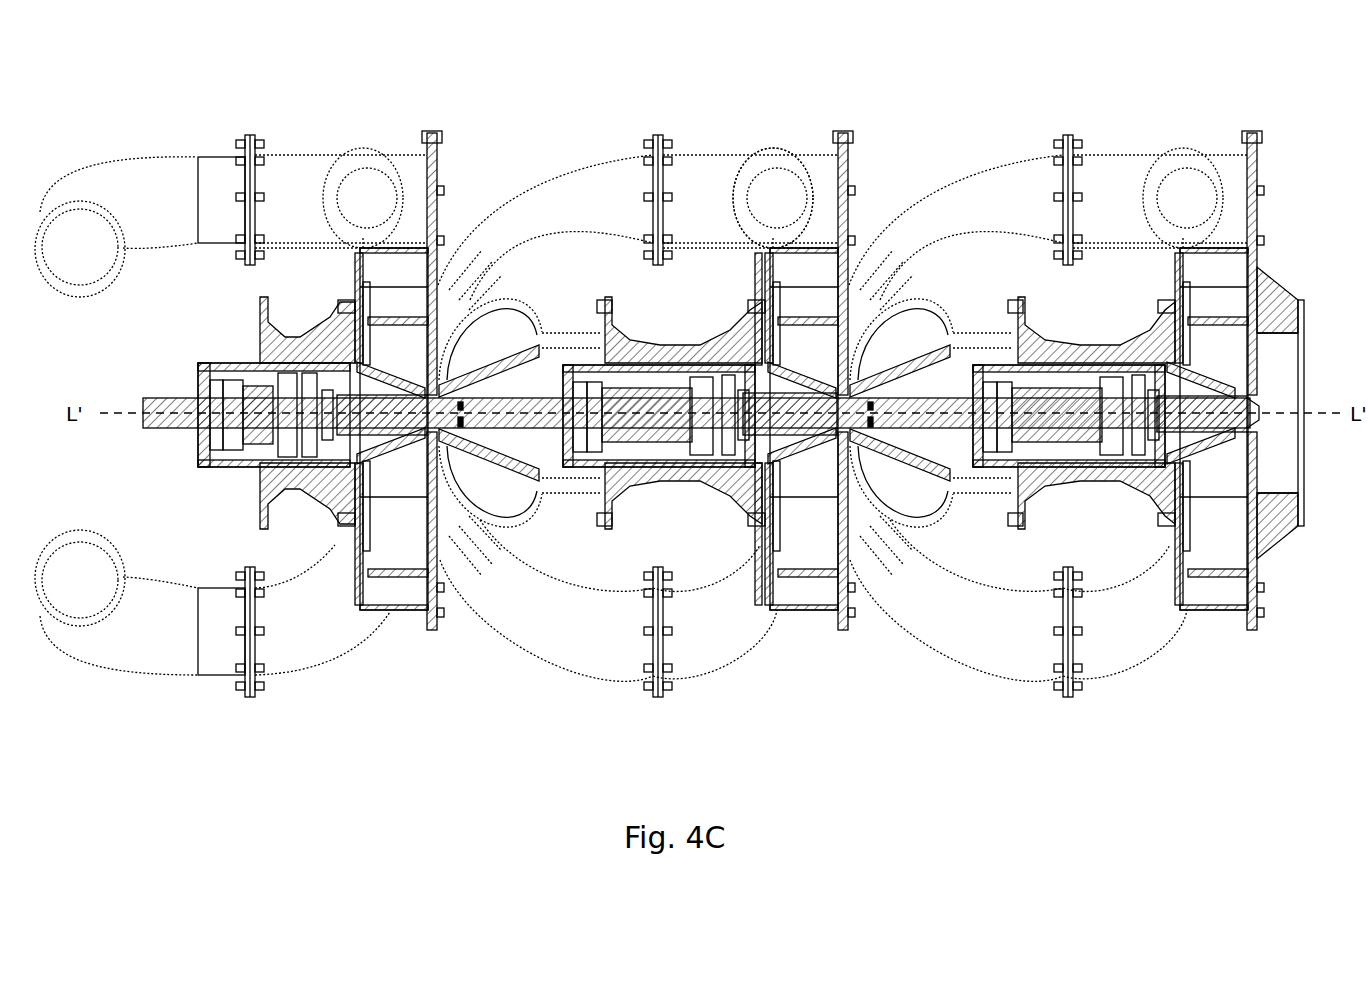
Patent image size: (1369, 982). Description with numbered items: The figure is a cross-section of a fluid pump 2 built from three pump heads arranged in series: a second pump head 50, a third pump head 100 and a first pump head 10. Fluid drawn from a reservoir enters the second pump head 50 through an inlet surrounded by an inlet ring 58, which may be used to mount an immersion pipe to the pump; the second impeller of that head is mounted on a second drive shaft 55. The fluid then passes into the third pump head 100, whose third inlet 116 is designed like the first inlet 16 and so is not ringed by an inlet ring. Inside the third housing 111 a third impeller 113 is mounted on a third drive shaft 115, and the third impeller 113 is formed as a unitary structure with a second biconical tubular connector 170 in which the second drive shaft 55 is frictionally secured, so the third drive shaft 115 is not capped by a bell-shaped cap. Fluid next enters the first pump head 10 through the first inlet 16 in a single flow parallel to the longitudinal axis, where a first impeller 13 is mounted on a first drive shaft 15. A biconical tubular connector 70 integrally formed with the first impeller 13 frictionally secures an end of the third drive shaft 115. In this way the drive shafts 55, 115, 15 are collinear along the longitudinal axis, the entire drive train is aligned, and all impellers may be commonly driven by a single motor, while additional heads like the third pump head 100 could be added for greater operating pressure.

The fluid pump 2 is at (736, 43).
The first pump head 10 is at (377, 655).
The third pump head 100 is at (810, 655).
The second pump head 50 is at (1217, 655).
The first impeller 13 is at (400, 563).
The third impeller 113 is at (802, 560).
The first drive shaft 15 is at (158, 427).
The first inlet 16 is at (505, 405).
The third drive shaft 115 is at (497, 405).
The third housing 111 is at (810, 267).
The third inlet 116 is at (855, 400).
The biconical tubular connector 70 is at (443, 433).
The second biconical tubular connector 170 is at (852, 428).
The second drive shaft 55 is at (1245, 428).
The inlet ring 58 is at (1298, 508).